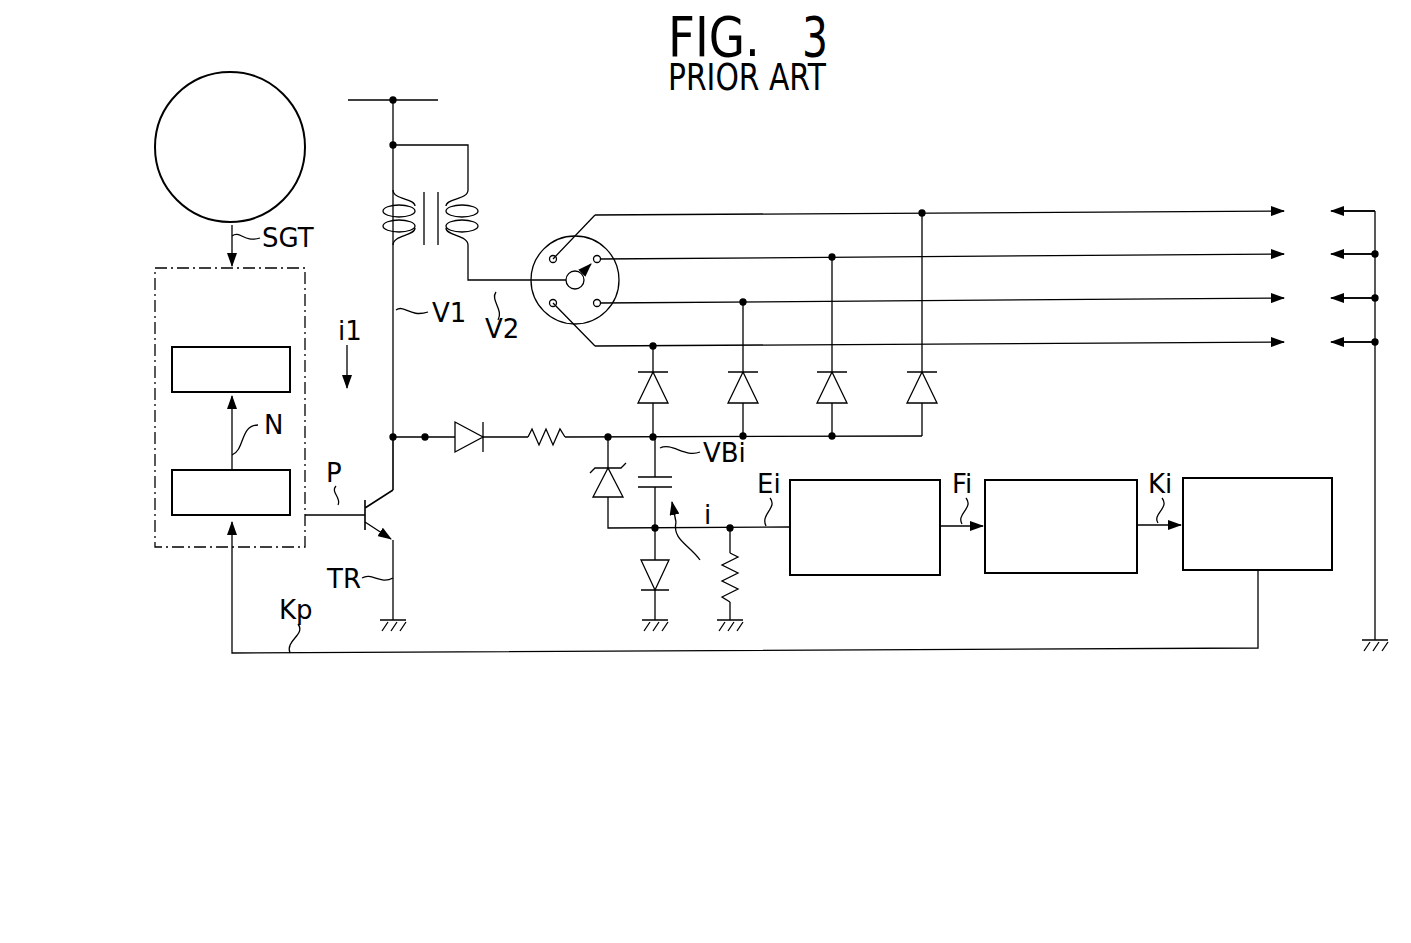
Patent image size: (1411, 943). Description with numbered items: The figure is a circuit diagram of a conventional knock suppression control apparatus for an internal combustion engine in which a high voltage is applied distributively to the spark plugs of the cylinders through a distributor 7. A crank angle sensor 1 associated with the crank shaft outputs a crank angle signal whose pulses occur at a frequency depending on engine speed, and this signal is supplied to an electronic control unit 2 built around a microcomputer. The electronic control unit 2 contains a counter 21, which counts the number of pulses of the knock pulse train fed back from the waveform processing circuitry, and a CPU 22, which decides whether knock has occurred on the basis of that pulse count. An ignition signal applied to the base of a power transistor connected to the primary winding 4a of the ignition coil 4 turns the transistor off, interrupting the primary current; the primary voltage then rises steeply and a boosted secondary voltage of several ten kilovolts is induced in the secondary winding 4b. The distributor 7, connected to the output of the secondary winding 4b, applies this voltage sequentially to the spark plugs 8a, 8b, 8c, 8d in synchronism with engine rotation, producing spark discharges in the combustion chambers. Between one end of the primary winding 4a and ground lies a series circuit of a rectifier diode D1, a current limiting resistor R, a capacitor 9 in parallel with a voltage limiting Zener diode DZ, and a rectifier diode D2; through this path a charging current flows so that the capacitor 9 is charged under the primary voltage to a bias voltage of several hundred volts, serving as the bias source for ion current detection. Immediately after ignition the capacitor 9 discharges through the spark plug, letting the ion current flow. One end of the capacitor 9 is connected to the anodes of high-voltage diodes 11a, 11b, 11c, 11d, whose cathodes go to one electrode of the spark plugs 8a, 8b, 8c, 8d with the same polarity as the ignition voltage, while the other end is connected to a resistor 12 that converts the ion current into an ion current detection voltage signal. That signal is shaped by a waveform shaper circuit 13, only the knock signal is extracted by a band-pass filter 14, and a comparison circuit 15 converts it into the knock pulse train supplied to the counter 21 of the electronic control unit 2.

The crank angle sensor 1 is at (157, 145).
The electronic control unit (ECU) 2 is at (155, 300).
The counter 21 is at (172, 495).
The CPU 22 is at (172, 372).
The ignition coil 4 is at (444, 179).
The primary winding 4a is at (385, 208).
The secondary winding 4b is at (485, 205).
The distributor 7 is at (538, 247).
The spark plug 8a is at (1308, 340).
The spark plug 8b is at (1308, 297).
The spark plug 8c is at (1308, 253).
The spark plug 8d is at (1308, 210).
The capacitor 9 is at (675, 488).
The high-voltage diode 11a is at (640, 390).
The high-voltage diode 11b is at (728, 395).
The high-voltage diode 11c is at (820, 395).
The high-voltage diode 11d is at (910, 395).
The resistor 12 is at (745, 572).
The waveform shaper circuit 13 is at (865, 480).
The band-pass filter 14 is at (1062, 480).
The comparison circuit 15 is at (1257, 478).
The rectifier diode D1 is at (468, 420).
The rectifier diode D2 is at (640, 578).
The Zener diode DZ is at (596, 480).
The current limiting resistor R is at (544, 424).